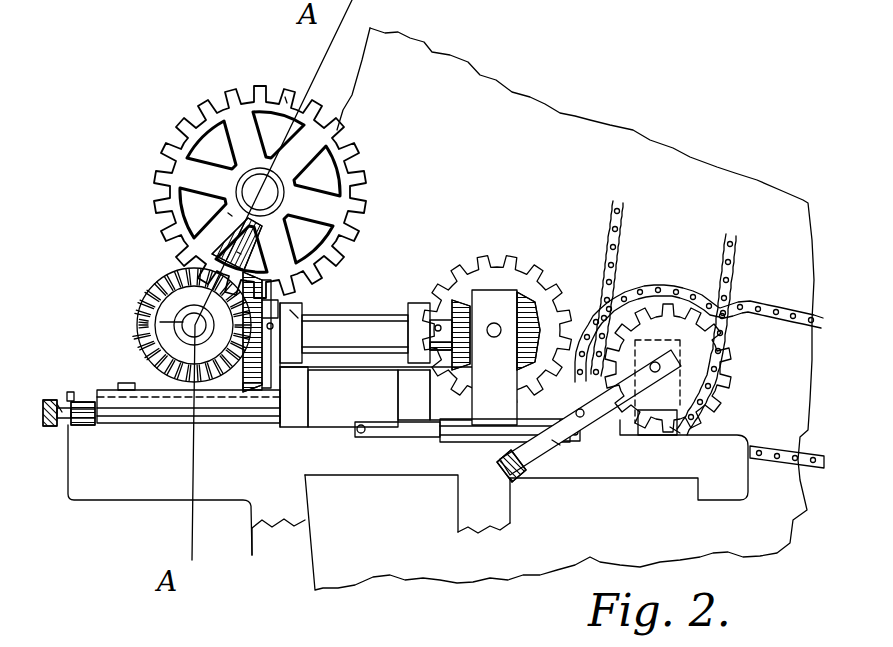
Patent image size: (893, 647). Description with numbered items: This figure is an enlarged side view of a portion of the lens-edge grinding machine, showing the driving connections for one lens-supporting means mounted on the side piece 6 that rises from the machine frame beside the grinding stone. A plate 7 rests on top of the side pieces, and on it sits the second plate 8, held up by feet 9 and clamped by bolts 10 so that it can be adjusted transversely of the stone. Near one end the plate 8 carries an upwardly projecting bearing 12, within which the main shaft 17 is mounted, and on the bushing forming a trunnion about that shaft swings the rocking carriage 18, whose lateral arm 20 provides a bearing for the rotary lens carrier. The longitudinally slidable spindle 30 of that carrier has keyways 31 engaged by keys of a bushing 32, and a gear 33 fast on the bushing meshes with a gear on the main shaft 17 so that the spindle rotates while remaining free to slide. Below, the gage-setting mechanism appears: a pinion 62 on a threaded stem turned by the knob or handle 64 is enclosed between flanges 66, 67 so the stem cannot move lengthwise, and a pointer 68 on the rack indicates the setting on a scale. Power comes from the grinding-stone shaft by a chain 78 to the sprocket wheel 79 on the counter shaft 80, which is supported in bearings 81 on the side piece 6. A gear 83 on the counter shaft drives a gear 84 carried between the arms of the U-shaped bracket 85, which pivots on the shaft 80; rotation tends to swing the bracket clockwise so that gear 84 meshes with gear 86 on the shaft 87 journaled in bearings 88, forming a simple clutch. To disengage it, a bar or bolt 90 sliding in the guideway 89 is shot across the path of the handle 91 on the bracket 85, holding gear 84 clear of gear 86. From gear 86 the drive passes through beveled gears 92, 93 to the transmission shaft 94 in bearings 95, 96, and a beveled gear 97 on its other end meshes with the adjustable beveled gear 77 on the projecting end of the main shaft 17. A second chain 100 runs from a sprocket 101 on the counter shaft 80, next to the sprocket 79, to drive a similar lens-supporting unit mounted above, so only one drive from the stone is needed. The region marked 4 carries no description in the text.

The plate/frame section 4 is at (590, 118).
The side piece 6 is at (263, 503).
The plate 7 is at (148, 422).
The second plate 8 is at (108, 393).
The feet 9 is at (182, 413).
The bolts 10 is at (125, 388).
The bearing 12 is at (210, 387).
The main shaft 17 is at (187, 323).
The rocking or swinging carriage 18 is at (237, 252).
The arm 20 is at (228, 213).
The longitudinally slidable spindle 30 is at (240, 172).
The keyways 31 is at (246, 244).
The bushing 32 is at (255, 175).
The gear 33 is at (287, 103).
The pinion 62 is at (80, 426).
The knob or handle 64 is at (48, 427).
The wall or flange 66 is at (67, 397).
The wall or flange 67 is at (95, 415).
The pointer 68 is at (68, 392).
The gear 77 is at (160, 322).
The chain 78 is at (788, 490).
The sprocket wheel 79 is at (740, 390).
The counter shaft 80 is at (655, 378).
The bearing 81 is at (670, 427).
The gear 83 is at (662, 298).
The gear 84 is at (596, 438).
The U-shaped bracket 85 is at (503, 470).
The gear 86 is at (493, 272).
The shaft 87 is at (494, 337).
The bearings 88 is at (497, 310).
The guideway 89 is at (552, 442).
The bar or bolt 90 is at (395, 430).
The handle 91 is at (578, 410).
The beveled gear 92 is at (528, 312).
The beveled gear 93 is at (457, 300).
The transmission shaft 94 is at (360, 327).
The bearing 95 is at (410, 307).
The bearing 96 is at (298, 316).
The beveled gear 97 is at (279, 405).
The chain 100 is at (622, 223).
The sprocket 101 is at (632, 312).